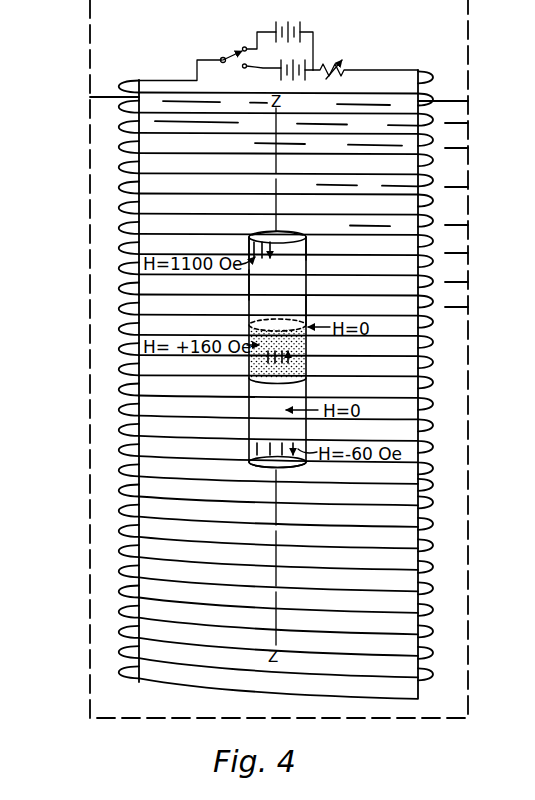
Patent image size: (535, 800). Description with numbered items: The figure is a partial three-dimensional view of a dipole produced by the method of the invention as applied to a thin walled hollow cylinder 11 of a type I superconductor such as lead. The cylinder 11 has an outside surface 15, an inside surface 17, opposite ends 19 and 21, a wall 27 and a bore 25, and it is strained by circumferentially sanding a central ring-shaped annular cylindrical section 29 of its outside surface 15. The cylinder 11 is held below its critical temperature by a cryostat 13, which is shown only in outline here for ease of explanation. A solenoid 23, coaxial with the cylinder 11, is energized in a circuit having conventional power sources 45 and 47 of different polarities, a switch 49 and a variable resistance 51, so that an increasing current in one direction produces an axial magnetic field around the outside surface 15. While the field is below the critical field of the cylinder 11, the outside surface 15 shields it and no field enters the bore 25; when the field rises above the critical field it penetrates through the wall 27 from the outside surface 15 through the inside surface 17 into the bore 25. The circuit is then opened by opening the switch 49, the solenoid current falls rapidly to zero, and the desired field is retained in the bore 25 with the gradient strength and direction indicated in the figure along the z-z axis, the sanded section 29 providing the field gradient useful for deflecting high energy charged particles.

The hollow cylinder 11 is at (279, 341).
The cryostat 13 is at (88, 130).
The outside surface 15 is at (247, 288).
The inside surface 17 is at (266, 233).
The end 19 is at (303, 233).
The end 21 is at (287, 467).
The solenoid 23 is at (356, 284).
The bore 25 is at (283, 229).
The wall 27 is at (308, 310).
The central ring-shaped annular cylindrical section 29 is at (271, 328).
The power source 45 is at (285, 77).
The power source 47 is at (307, 26).
The switch 49 is at (224, 64).
The variable resistance 51 is at (341, 74).